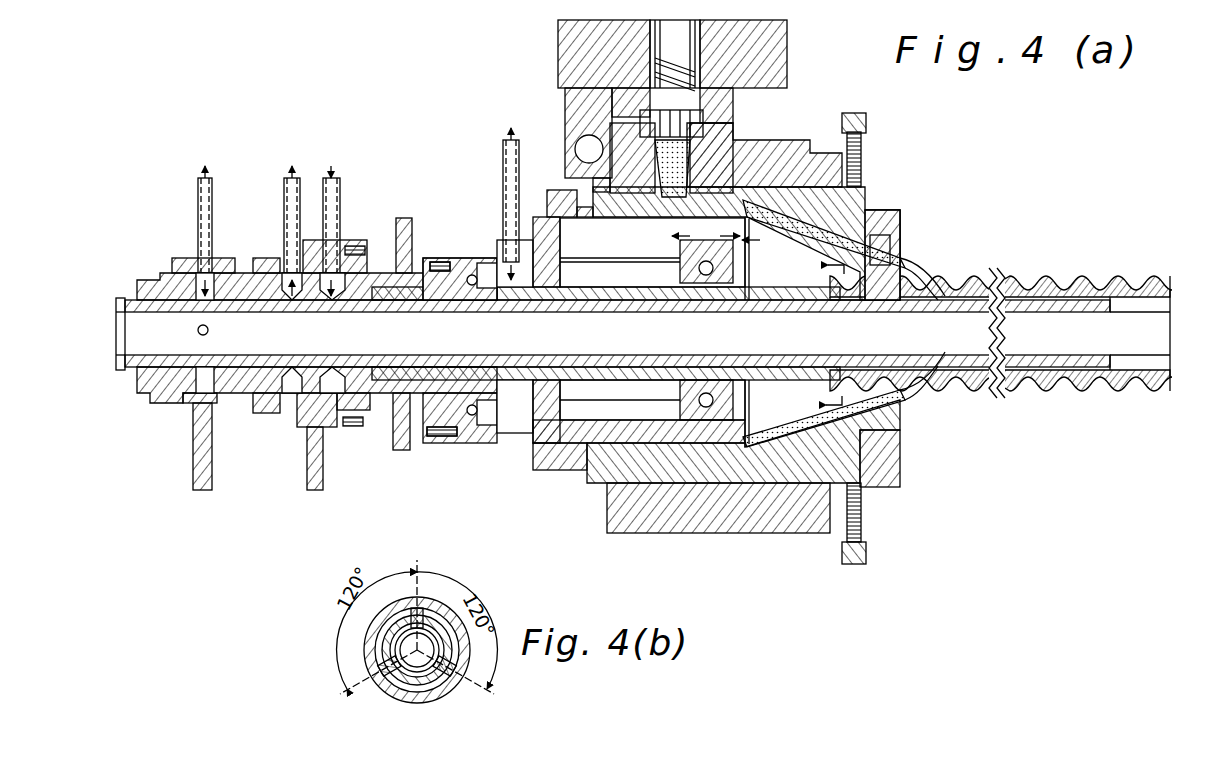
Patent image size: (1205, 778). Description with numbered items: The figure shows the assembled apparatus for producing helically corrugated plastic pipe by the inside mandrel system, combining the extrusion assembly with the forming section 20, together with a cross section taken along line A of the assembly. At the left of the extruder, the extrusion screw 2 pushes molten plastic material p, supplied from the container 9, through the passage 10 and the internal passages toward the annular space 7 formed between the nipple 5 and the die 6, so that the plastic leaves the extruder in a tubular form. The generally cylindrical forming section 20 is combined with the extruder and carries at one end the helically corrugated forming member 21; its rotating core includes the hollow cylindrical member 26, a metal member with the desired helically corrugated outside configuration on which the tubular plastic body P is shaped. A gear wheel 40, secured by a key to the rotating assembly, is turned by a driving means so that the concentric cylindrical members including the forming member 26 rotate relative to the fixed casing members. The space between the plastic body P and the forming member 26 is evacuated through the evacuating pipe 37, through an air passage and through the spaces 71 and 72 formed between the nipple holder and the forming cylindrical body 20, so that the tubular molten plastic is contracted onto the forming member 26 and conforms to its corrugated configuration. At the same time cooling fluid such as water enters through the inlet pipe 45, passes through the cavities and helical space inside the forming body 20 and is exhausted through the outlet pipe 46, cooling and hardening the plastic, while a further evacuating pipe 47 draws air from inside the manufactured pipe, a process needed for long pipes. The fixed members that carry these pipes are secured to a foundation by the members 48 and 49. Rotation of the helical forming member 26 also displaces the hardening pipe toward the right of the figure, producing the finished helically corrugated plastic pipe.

The extrusion screw 2 is at (692, 30).
The nipple 5 is at (770, 185).
The die 6 is at (900, 256).
The annular space 7 is at (912, 270).
The container 9 is at (787, 30).
The passage 10 is at (700, 52).
The forming section 20 is at (566, 350).
The helically corrugated forming member 21 is at (1078, 269).
The hollow cylindrical member 26 is at (972, 280).
The evacuating pipe 37 is at (514, 140).
The gear wheel 40 is at (406, 218).
The inlet pipe 45 is at (336, 177).
The outlet pipe 46 is at (293, 177).
The evacuating pipe 47 is at (209, 177).
The securing member 48 is at (201, 490).
The securing member 49 is at (313, 490).
The space 71 is at (664, 250).
The space 72 is at (786, 265).
The molten plastic material p is at (932, 284).
The plastic body P is at (1001, 316).
The section line A— A is at (823, 336).